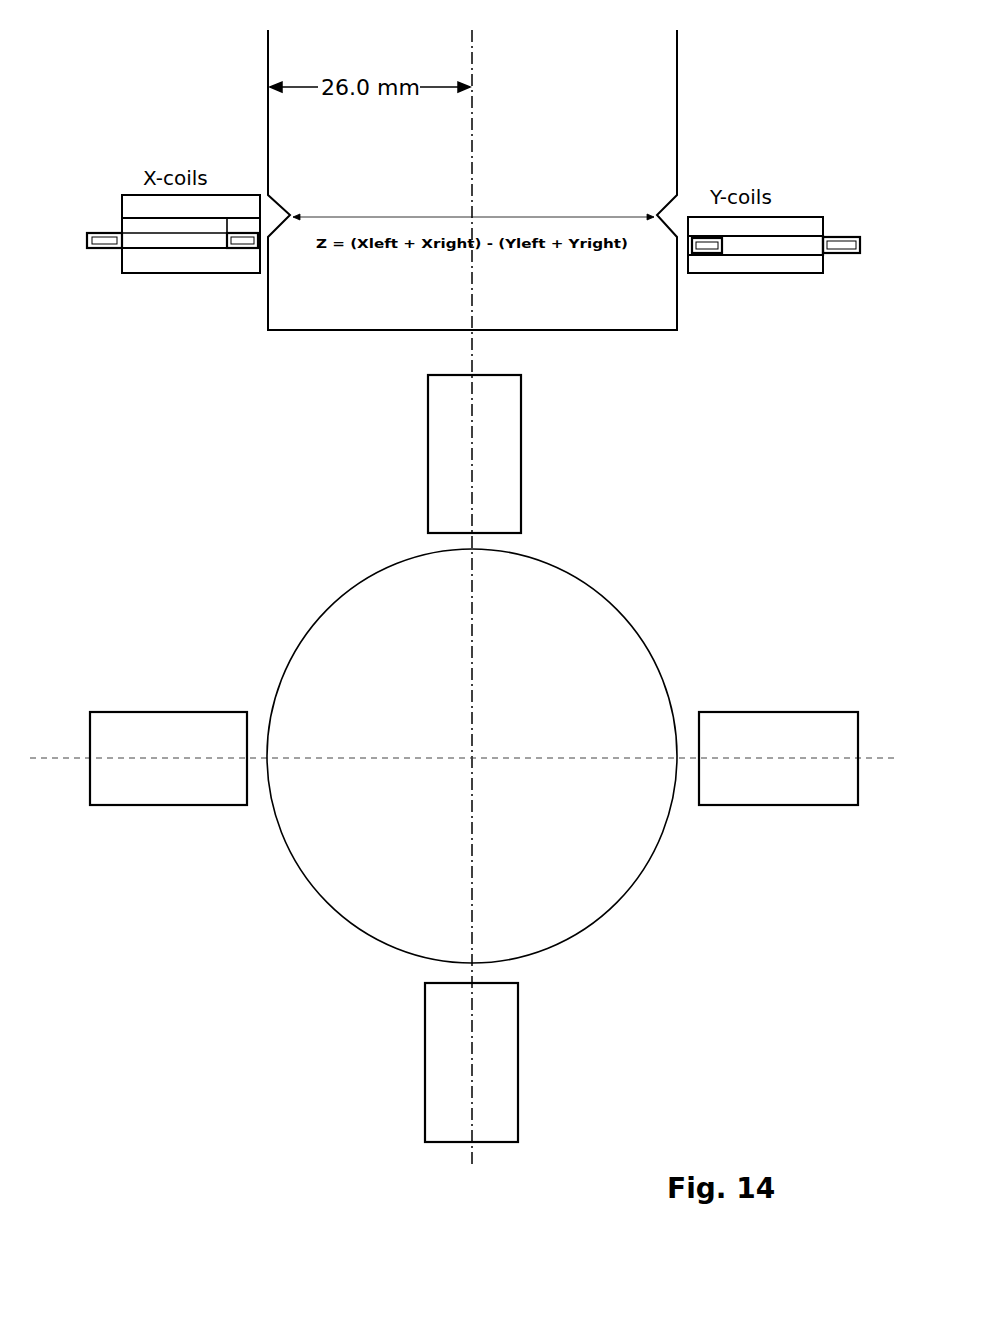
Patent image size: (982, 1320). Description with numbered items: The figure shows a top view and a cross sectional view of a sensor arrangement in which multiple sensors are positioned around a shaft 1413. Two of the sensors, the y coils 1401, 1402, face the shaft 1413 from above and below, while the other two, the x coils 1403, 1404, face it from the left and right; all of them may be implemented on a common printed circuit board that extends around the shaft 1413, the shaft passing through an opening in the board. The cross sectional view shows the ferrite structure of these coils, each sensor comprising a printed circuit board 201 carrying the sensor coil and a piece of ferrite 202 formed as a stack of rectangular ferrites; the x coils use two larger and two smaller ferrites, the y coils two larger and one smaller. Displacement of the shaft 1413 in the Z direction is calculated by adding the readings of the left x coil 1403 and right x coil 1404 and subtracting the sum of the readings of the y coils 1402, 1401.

The printed circuit board 201 is at (243, 252).
The piece of ferrite 202 is at (222, 195).
The y coil 1401 is at (428, 487).
The y coil 1402 is at (515, 1108).
The x coil 1403 is at (188, 712).
The x coil 1404 is at (745, 712).
The shaft 1413 is at (603, 330).